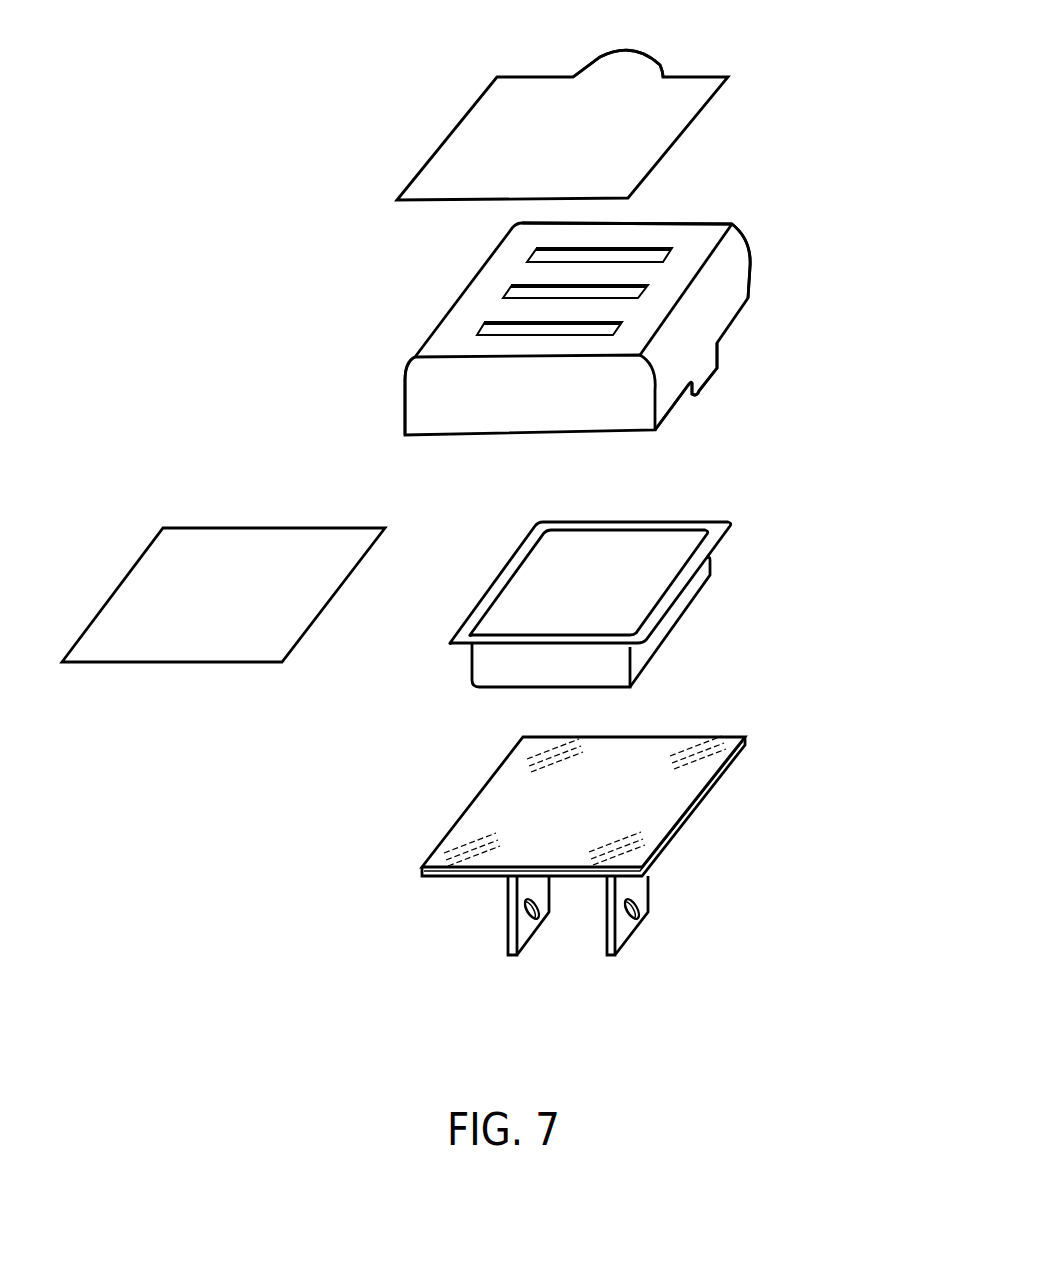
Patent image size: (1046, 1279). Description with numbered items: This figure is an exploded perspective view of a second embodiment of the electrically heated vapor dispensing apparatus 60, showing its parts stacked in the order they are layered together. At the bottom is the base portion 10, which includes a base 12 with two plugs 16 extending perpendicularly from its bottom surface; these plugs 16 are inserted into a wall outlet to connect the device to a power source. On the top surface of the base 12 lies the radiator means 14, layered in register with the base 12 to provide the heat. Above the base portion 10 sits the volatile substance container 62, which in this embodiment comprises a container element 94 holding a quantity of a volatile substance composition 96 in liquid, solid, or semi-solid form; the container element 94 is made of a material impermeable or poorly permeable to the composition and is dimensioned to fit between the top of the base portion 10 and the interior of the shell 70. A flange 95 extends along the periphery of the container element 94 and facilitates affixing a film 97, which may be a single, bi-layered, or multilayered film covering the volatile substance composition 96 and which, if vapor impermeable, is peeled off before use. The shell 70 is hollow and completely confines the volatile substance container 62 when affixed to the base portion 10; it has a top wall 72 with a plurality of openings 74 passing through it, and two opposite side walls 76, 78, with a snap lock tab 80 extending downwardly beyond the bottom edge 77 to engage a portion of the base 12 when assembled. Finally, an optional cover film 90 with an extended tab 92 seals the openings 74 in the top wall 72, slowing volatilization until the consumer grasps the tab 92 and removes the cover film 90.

The base portion 10 is at (740, 708).
The base 12 is at (423, 876).
The radiator means 14 is at (473, 822).
The plugs 16 is at (527, 947).
The electrically heated vapor dispensing apparatus 60 is at (855, 52).
The volatile substance container 62 is at (825, 516).
The shell 70 is at (855, 272).
The top wall 72 is at (693, 232).
The openings 74 is at (528, 258).
The side wall 76 is at (742, 273).
The bottom edge 77 is at (667, 418).
The side wall 78 is at (405, 400).
The snap lock tab 80 is at (710, 373).
The cover film 90 is at (450, 134).
The extended tab 92 is at (652, 60).
The container element 94 is at (468, 670).
The flange 95 is at (715, 530).
The volatile substance composition 96 is at (495, 615).
The film 97 is at (137, 588).